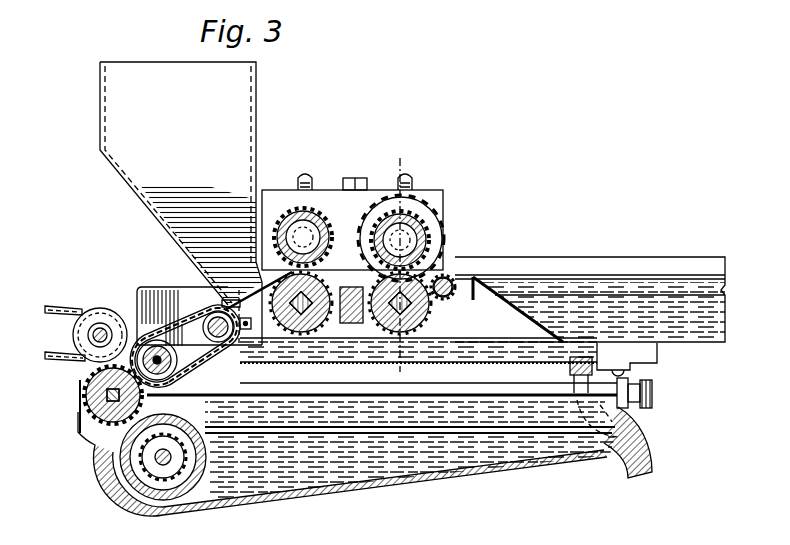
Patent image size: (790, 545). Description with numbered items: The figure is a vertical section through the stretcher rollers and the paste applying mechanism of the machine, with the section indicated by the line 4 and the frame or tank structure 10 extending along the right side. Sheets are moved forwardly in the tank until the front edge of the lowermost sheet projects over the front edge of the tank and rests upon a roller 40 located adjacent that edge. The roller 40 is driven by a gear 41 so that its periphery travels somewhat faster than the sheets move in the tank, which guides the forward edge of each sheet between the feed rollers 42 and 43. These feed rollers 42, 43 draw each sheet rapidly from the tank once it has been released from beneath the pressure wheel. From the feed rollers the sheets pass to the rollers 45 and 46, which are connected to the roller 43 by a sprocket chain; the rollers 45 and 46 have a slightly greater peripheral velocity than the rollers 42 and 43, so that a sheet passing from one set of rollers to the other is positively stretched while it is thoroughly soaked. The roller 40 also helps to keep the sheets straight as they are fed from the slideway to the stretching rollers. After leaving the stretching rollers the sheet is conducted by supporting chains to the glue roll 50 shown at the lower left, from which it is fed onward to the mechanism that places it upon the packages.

The section line 4- 4 is at (418, 157).
The frame 10 is at (690, 342).
The roller 40 is at (455, 277).
The gear 41 is at (440, 208).
The feed roller 42 is at (432, 224).
The feed roller 43 is at (412, 330).
The roller 45 is at (315, 215).
The roller 46 is at (308, 320).
The glue roll 50 is at (90, 393).